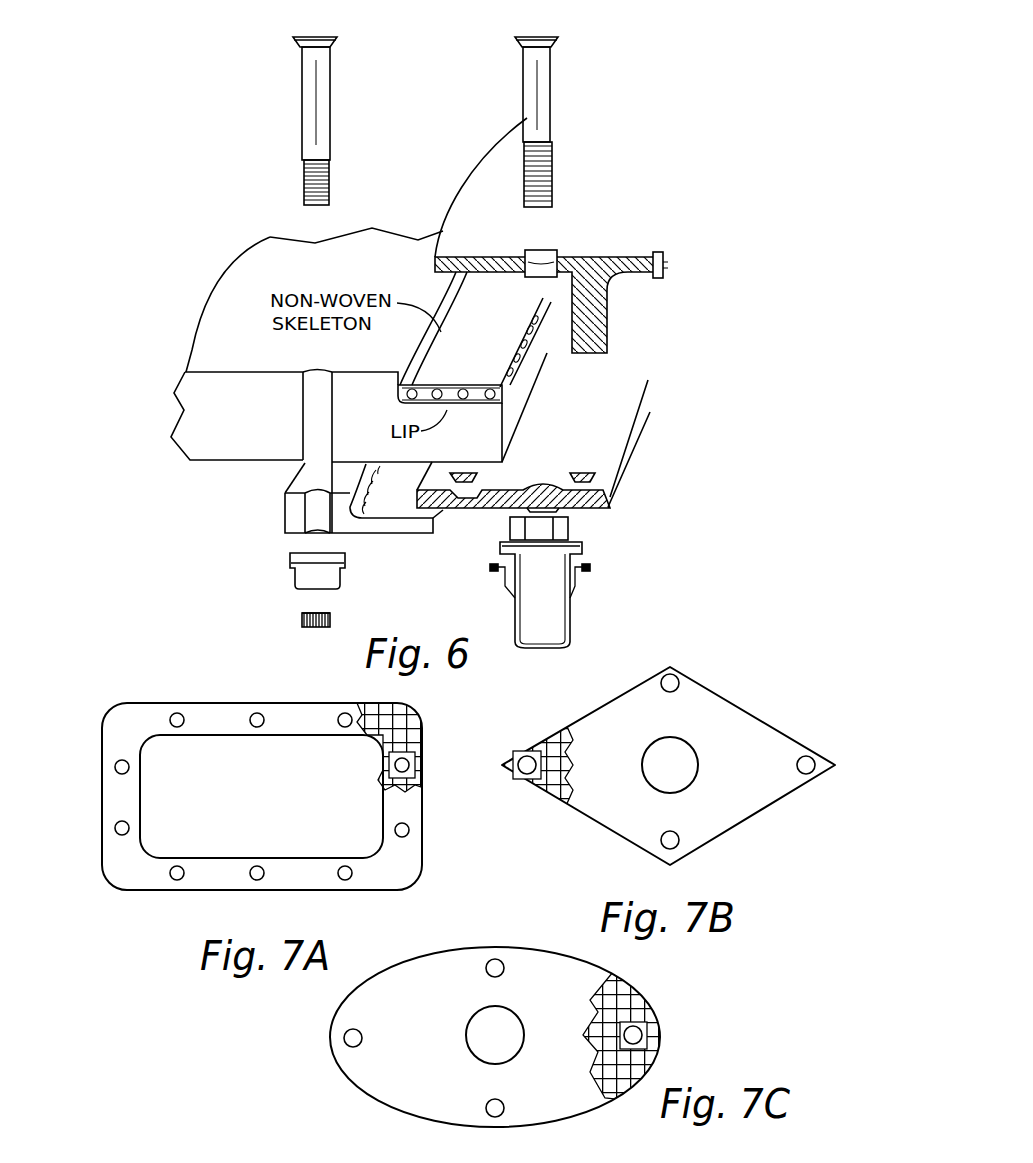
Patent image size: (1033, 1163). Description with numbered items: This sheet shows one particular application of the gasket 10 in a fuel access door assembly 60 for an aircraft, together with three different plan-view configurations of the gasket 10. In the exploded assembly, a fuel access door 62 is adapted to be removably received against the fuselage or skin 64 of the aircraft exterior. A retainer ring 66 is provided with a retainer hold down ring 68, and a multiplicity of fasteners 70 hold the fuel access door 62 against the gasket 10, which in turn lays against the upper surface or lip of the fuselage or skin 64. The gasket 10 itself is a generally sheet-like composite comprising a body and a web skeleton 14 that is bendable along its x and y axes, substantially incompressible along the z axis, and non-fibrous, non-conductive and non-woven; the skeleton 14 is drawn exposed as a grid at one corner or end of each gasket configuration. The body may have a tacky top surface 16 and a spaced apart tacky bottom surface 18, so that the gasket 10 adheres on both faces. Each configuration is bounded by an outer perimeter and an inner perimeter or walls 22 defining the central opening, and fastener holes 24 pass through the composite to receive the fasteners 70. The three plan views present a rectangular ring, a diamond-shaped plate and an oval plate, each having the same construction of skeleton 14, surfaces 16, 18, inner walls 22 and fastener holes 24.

In FIG. 6, the gasket 10 is at (516, 366).
In FIG. 7A, the gasket 10 is at (305, 792).
In FIG. 7B, the gasket 10 is at (665, 768).
In FIG. 7C, the gasket 10 is at (539, 1037).
In FIG. 7A, the web skeleton 14 is at (402, 720).
In FIG. 7B, the web skeleton 14 is at (548, 797).
In FIG. 7C, the web skeleton 14 is at (633, 998).
In FIG. 7A, the tacky top surface 16 is at (262, 799).
In FIG. 7B, the tacky top surface 16 is at (738, 802).
In FIG. 7C, the tacky top surface 16 is at (455, 1038).
In FIG. 7A, the tacky bottom surface 18 is at (262, 799).
In FIG. 7B, the tacky bottom surface 18 is at (738, 802).
In FIG. 7C, the tacky bottom surface 18 is at (455, 1038).
In FIG. 7A, the inner perimeter or walls 22 is at (292, 740).
In FIG. 7B, the inner perimeter or walls 22 is at (676, 741).
In FIG. 7C, the inner perimeter or walls 22 is at (504, 1010).
In FIG. 7A, the fastener holes 24 is at (417, 765).
In FIG. 7B, the fastener holes 24 is at (673, 673).
In FIG. 7C, the fastener holes 24 is at (652, 1032).
In FIG. 6, the fuel access door assembly 60 is at (643, 106).
In FIG. 6, the fuel access door 62 is at (583, 233).
In FIG. 6, the fuselage or skin 64 is at (200, 422).
In FIG. 6, the retainer ring 66 is at (613, 496).
In FIG. 6, the retainer hold down ring 68 is at (283, 511).
In FIG. 6, the fasteners 70 is at (555, 108).